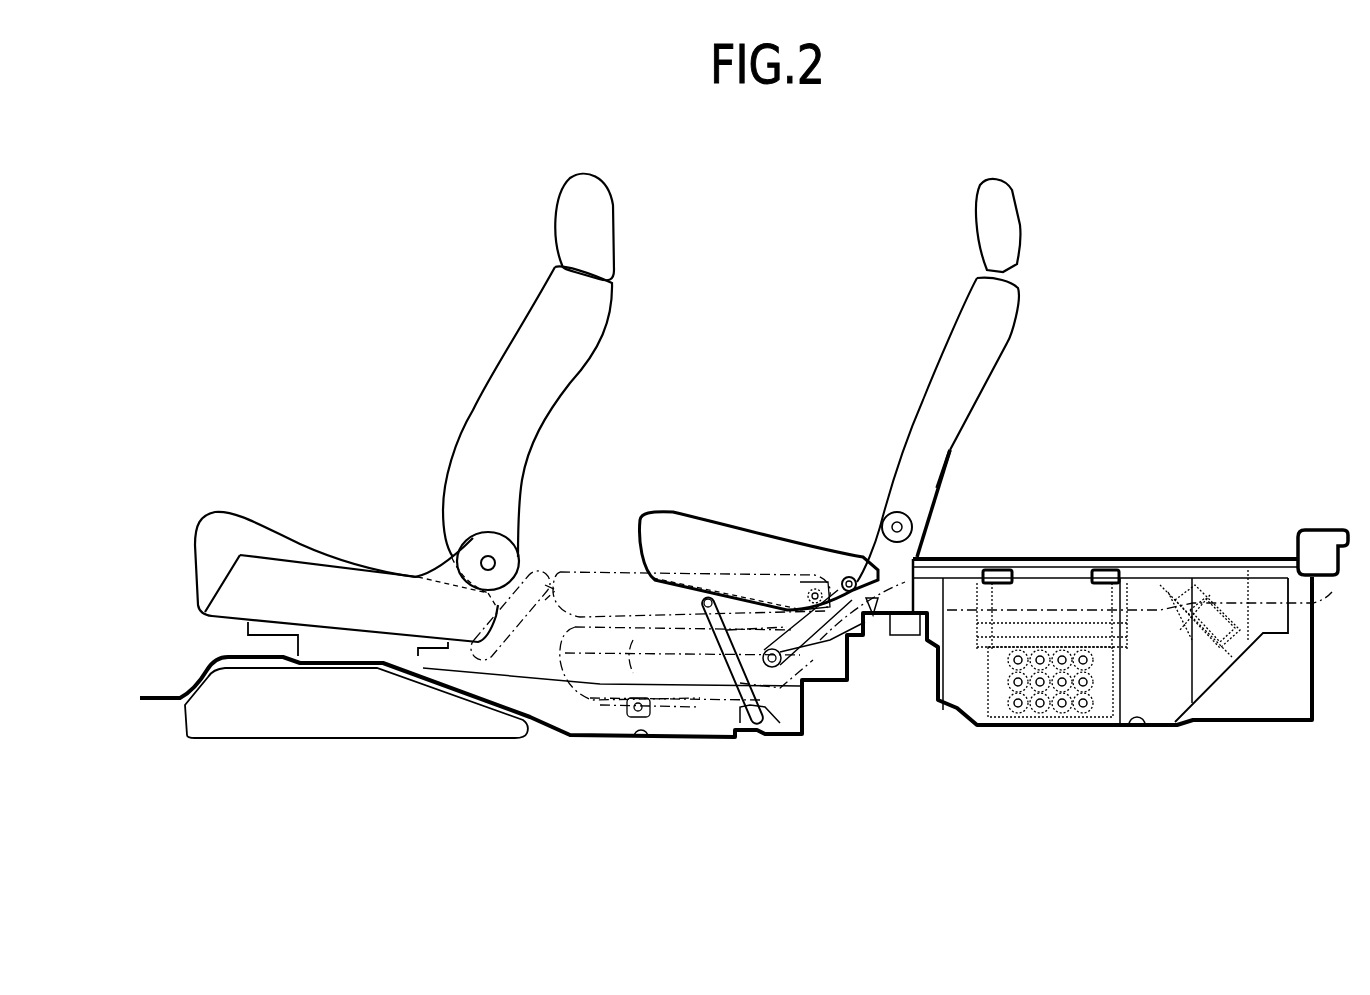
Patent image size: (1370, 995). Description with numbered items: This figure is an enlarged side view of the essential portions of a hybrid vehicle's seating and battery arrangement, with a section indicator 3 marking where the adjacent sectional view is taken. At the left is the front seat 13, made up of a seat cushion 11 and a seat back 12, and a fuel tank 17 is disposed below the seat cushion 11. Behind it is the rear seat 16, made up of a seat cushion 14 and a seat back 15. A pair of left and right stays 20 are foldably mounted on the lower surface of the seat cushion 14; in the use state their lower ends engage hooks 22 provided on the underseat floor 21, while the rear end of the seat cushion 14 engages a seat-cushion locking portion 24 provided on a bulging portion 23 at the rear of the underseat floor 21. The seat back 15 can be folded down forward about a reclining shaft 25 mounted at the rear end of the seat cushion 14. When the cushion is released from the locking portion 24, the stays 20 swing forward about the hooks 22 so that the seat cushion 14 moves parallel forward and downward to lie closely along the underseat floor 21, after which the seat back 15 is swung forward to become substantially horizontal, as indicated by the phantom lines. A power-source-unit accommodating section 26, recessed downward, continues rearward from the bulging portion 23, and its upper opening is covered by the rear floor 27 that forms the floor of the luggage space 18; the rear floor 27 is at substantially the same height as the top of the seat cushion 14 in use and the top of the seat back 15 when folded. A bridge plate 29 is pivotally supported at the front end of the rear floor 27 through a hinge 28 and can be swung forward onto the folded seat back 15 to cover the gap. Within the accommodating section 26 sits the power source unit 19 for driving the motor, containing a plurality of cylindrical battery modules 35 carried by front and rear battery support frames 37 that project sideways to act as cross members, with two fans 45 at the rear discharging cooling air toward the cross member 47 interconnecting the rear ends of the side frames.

The section line indicator for FIG. 3 is at (1082, 244).
The seat cushion 11 is at (357, 580).
The seat back 12 is at (493, 410).
The front seat 13 is at (392, 378).
The seat cushion 14 is at (777, 555).
The seat back 15 is at (942, 400).
The rear seat 16 is at (810, 365).
The fuel tank 17 is at (305, 742).
The luggage space 18 is at (1140, 489).
The power source unit 19 is at (1212, 691).
The stays 20 is at (733, 670).
The underseat floor 21 is at (633, 745).
The hooks 22 is at (743, 730).
The bulging portion 23 is at (902, 622).
The seat-cushion locking portion 24 is at (884, 625).
The reclining shaft 25 is at (890, 523).
The power-source-unit accommodating section 26 is at (1137, 733).
The rear floor 27 is at (1153, 558).
The hinge 28 is at (918, 557).
The bridge plate 29 is at (942, 484).
The battery modules 35 is at (1068, 715).
The battery support frames 37 is at (1108, 569).
The fans 45 is at (1215, 642).
The cross member 47 is at (1317, 530).